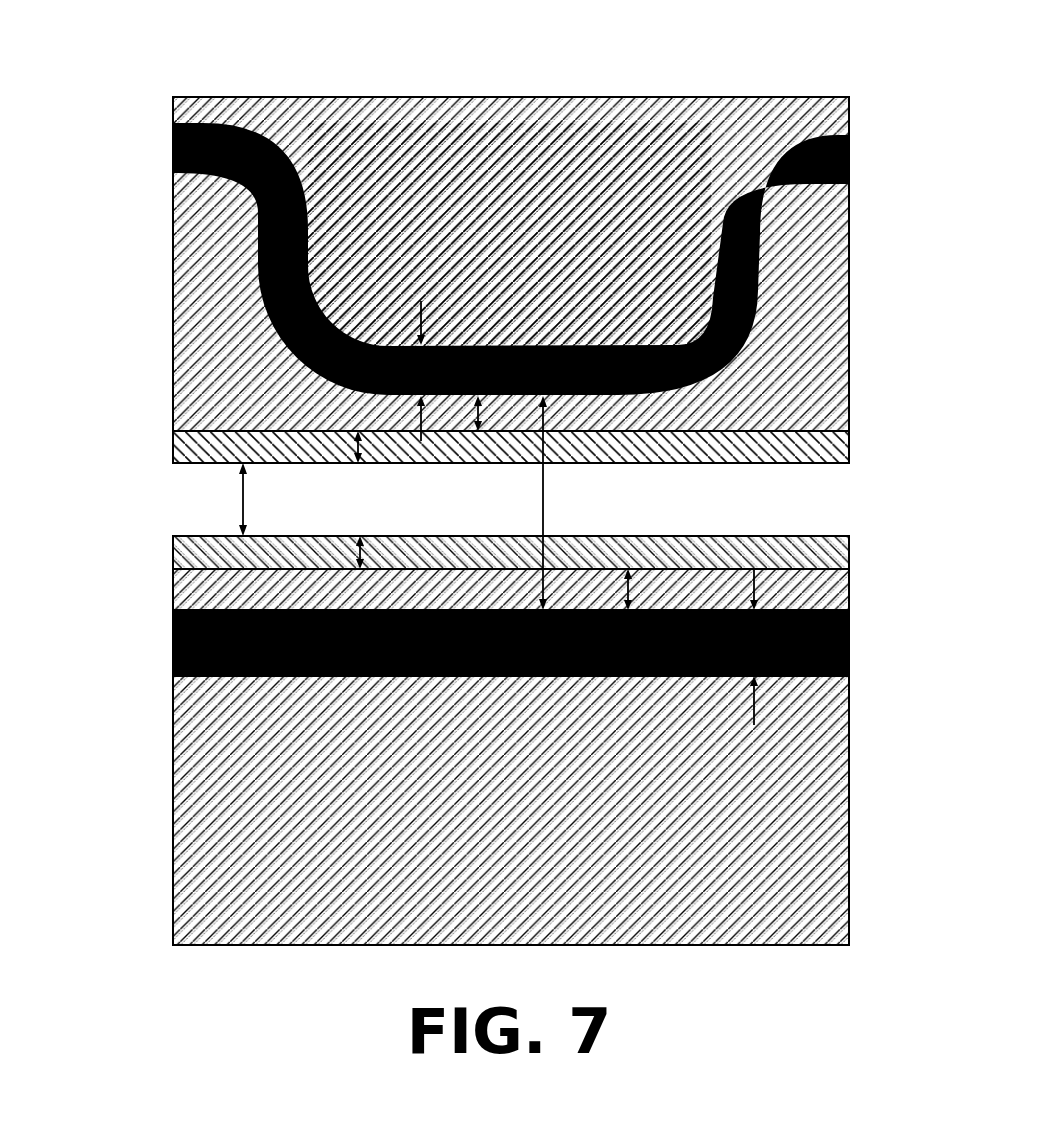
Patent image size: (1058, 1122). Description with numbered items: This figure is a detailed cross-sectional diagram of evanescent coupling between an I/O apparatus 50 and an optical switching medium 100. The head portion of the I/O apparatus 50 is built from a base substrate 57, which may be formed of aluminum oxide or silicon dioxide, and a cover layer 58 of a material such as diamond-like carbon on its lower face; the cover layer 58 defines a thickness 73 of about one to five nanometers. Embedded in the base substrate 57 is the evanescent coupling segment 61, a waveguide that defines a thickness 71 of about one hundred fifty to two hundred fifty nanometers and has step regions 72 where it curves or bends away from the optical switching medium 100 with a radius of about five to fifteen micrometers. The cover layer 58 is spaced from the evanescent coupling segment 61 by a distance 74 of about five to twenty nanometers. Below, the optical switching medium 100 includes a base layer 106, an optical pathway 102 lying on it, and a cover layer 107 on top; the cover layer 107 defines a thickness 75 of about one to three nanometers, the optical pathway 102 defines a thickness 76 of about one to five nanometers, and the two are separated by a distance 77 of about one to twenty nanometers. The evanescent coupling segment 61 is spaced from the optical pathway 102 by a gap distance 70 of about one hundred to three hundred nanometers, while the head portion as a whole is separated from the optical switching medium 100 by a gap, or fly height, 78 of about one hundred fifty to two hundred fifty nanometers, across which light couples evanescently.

The I/O apparatus 50 is at (150, 96).
The base substrate 57 is at (163, 271).
The cover layer 58 is at (163, 441).
The evanescent coupling segment 61 is at (280, 180).
The gap distance 70 is at (537, 490).
The thickness 71 is at (414, 418).
The step region 72 is at (650, 283).
The thickness 73 is at (352, 440).
The distance 74 is at (472, 405).
The thickness 75 is at (348, 548).
The thickness 76 is at (742, 580).
The distance 77 is at (622, 582).
The gap or fly height 78 is at (233, 493).
The optical switching medium 100 is at (150, 546).
The optical pathway 102 is at (790, 597).
The base layer 106 is at (843, 708).
The cover layer 107 is at (843, 540).